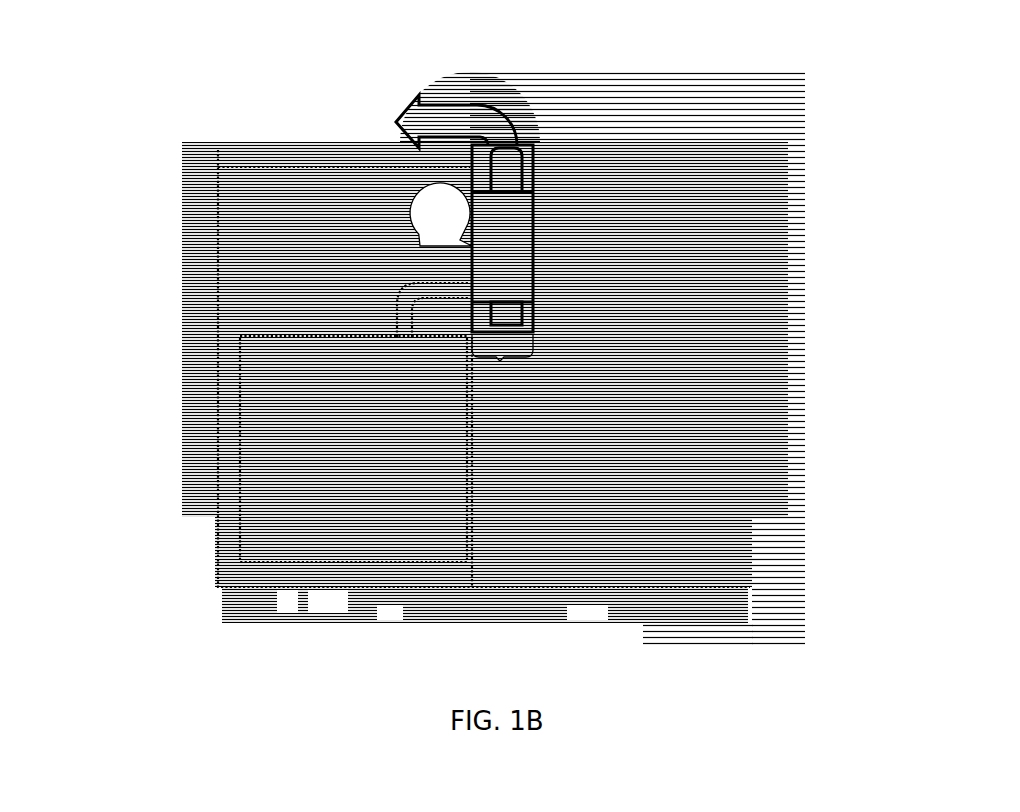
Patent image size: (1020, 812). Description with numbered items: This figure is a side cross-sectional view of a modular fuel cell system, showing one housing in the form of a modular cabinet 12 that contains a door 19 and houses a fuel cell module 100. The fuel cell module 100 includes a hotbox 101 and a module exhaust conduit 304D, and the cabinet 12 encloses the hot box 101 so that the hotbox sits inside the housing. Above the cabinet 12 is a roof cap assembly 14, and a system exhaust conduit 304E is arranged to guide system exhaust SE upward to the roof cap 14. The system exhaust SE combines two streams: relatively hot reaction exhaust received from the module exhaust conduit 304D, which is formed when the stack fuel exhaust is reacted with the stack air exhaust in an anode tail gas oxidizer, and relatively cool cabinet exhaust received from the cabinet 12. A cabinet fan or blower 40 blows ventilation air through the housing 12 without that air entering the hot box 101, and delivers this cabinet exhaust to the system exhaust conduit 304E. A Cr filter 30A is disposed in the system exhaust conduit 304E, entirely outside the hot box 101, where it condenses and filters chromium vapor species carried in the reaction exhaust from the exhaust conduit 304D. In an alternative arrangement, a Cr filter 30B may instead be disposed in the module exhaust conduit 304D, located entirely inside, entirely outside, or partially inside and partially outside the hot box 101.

The roof cap assembly 14 is at (463, 83).
The system exhaust SE is at (397, 123).
The system exhaust conduit 304E is at (535, 165).
The Cr filter 30A is at (535, 237).
The Cr filter 30B is at (400, 298).
The modular cabinet 12 is at (213, 292).
The hotbox 101 is at (240, 377).
The door 19 is at (185, 430).
The fuel cell module 100 is at (203, 541).
The exhaust conduit 304D is at (433, 298).
The cabinet fan 40 is at (453, 223).